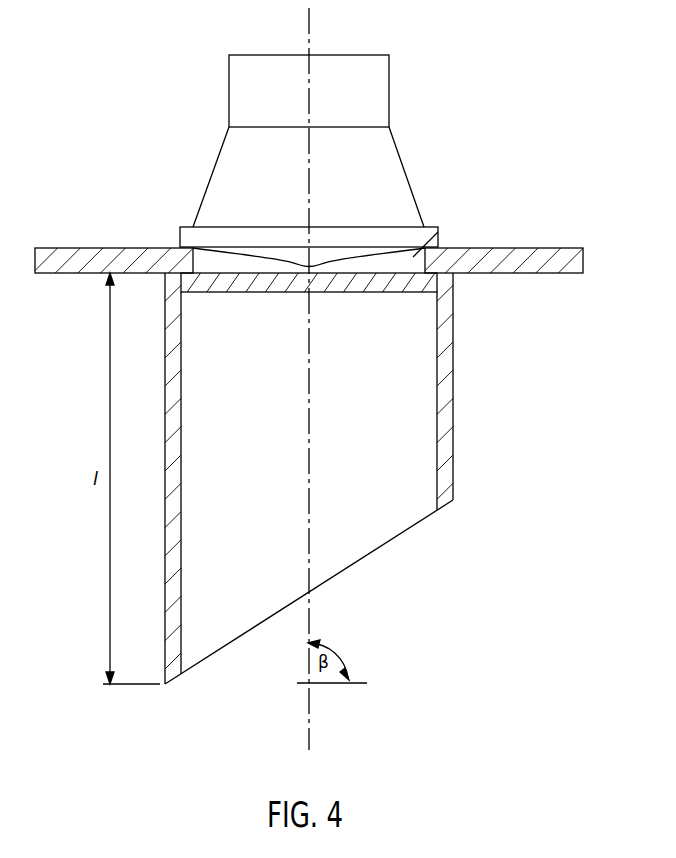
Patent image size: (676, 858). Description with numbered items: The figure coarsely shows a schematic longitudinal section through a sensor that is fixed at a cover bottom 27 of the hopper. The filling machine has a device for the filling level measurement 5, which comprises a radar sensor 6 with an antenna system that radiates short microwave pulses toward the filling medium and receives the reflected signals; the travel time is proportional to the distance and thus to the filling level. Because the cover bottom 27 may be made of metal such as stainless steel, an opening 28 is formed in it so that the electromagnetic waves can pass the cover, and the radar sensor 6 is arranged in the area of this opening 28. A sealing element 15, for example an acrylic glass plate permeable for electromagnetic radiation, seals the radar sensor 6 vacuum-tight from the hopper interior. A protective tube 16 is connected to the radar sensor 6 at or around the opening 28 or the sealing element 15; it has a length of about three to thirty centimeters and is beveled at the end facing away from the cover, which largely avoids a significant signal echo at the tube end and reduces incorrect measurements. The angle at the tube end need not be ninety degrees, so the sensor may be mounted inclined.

The device for the filling level measurement 5 is at (261, 478).
The radar sensor 6 is at (402, 157).
The sealing element 15 is at (340, 292).
The protective tube 16 is at (181, 549).
The cover bottom 27 is at (118, 247).
The opening 28 is at (439, 229).